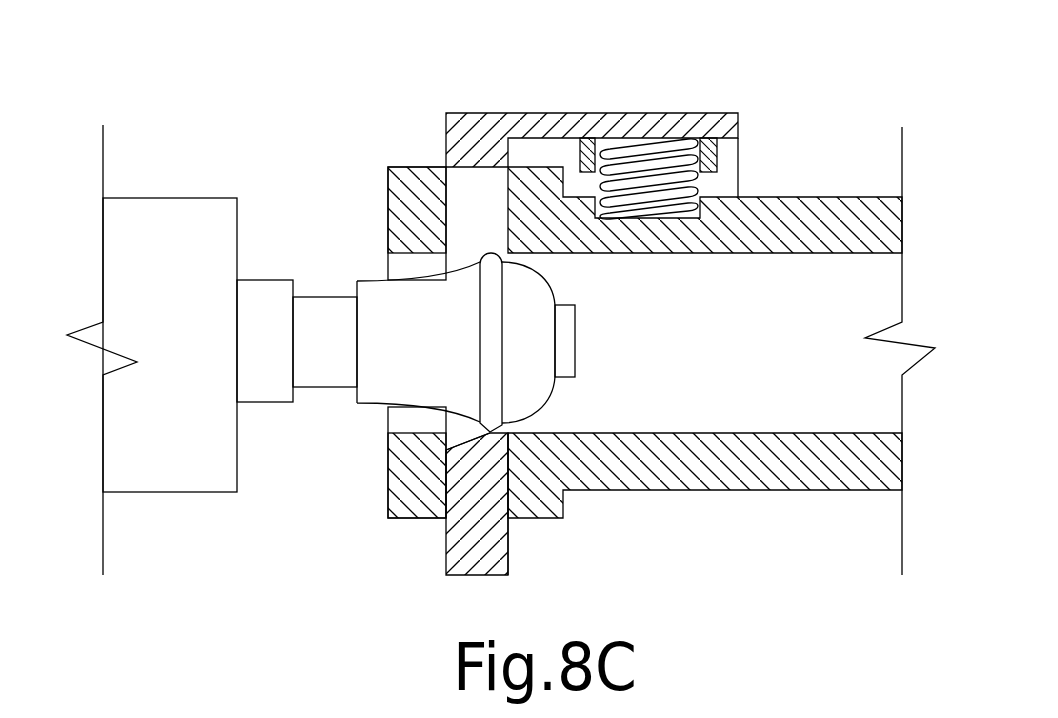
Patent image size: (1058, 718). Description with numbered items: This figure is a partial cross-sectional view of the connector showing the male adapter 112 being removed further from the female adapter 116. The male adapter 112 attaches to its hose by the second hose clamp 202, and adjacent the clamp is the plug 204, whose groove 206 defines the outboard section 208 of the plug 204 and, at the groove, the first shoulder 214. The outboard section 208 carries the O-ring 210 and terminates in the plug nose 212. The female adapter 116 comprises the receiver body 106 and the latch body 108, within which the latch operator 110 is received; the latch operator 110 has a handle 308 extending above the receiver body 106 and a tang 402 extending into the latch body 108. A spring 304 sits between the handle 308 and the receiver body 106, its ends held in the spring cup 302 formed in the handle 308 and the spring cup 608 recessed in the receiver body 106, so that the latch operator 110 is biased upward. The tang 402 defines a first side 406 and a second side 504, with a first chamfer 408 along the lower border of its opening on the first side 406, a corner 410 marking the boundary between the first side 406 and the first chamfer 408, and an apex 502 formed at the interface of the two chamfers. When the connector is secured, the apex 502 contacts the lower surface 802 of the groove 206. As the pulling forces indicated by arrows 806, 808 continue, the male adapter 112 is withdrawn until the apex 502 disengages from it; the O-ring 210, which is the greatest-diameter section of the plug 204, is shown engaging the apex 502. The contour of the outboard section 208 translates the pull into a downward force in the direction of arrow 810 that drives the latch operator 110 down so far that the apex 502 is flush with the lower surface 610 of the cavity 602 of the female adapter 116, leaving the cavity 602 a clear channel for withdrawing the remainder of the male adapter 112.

The receiver body 106 is at (848, 222).
The latch body 108 is at (417, 498).
The latch operator 110 is at (783, 63).
The male adapter 112 is at (310, 147).
The female adapter 116 is at (887, 110).
The second hose clamp 202 is at (184, 265).
The plug 204 is at (289, 322).
The groove 206 is at (347, 343).
The outboard section of the plug 208 is at (459, 338).
The O-ring 210 is at (488, 288).
The plug nose 212 is at (578, 348).
The first shoulder 214 is at (357, 403).
The spring cup 302 is at (572, 168).
The spring 304 is at (716, 150).
The handle 308 is at (457, 124).
The tang 402 is at (477, 553).
The first side 406 is at (508, 548).
The first chamfer 408 is at (493, 428).
The corner 410 is at (503, 428).
The apex 502 is at (488, 440).
The second side 504 is at (445, 550).
The cavity 602 is at (751, 378).
The spring cup 608 is at (705, 195).
The lower surface of the cavity 610 is at (848, 432).
The lower surface of the groove 802 is at (317, 386).
The pulling force 806 is at (207, 528).
The pulling force 808 is at (873, 528).
The downward force 810 is at (474, 257).